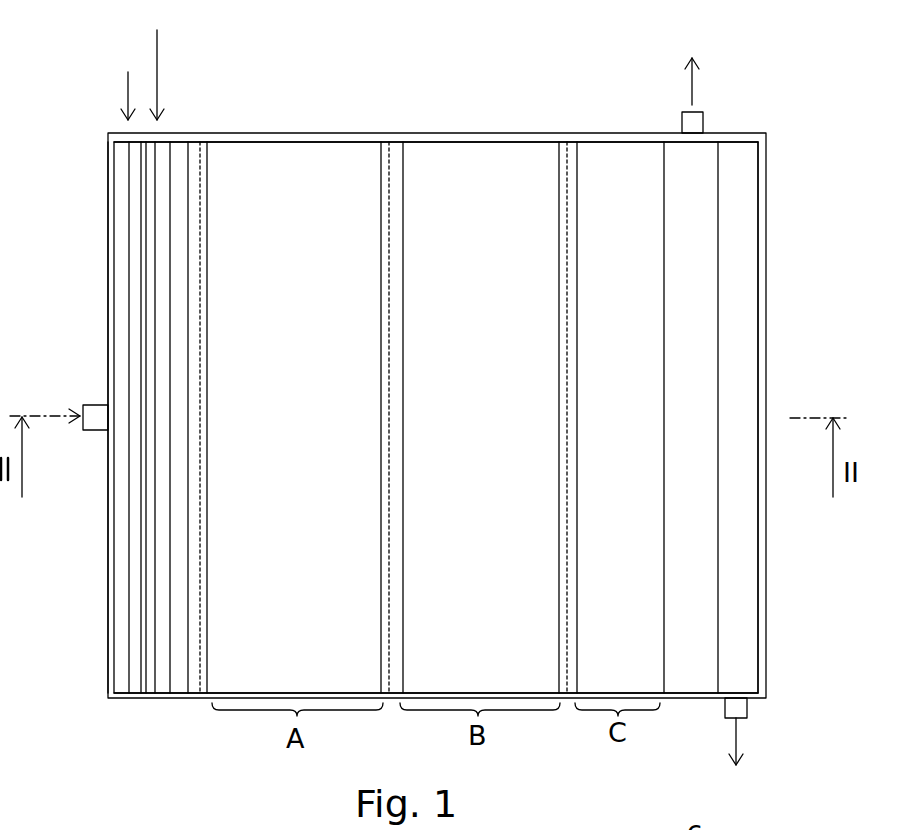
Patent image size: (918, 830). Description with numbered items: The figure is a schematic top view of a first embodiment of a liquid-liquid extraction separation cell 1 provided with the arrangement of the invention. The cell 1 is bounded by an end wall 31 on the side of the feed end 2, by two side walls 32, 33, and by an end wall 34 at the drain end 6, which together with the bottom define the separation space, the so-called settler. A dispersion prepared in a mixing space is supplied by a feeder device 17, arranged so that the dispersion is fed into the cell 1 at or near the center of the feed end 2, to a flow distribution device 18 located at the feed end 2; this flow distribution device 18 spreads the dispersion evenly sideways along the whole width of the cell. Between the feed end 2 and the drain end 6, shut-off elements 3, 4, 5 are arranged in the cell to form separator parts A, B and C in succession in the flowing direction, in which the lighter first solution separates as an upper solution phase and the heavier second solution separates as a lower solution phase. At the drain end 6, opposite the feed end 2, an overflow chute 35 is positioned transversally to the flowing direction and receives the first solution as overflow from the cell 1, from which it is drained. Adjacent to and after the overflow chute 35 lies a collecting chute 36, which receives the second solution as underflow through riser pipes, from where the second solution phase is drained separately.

The cell 1 is at (300, 200).
The feed end 2 is at (129, 76).
The flow distribution device 18 is at (162, 60).
The shut-off element 3 is at (197, 148).
The shut-off element 4 is at (400, 150).
The shut-off element 5 is at (575, 150).
The drain end 6 is at (719, 83).
The feeder device 17 is at (93, 405).
The end wall 31 is at (118, 616).
The side wall 32 is at (247, 143).
The side wall 33 is at (265, 693).
The end wall 34 is at (757, 313).
The overflow chute 35 is at (707, 415).
The collecting chute 36 is at (757, 415).